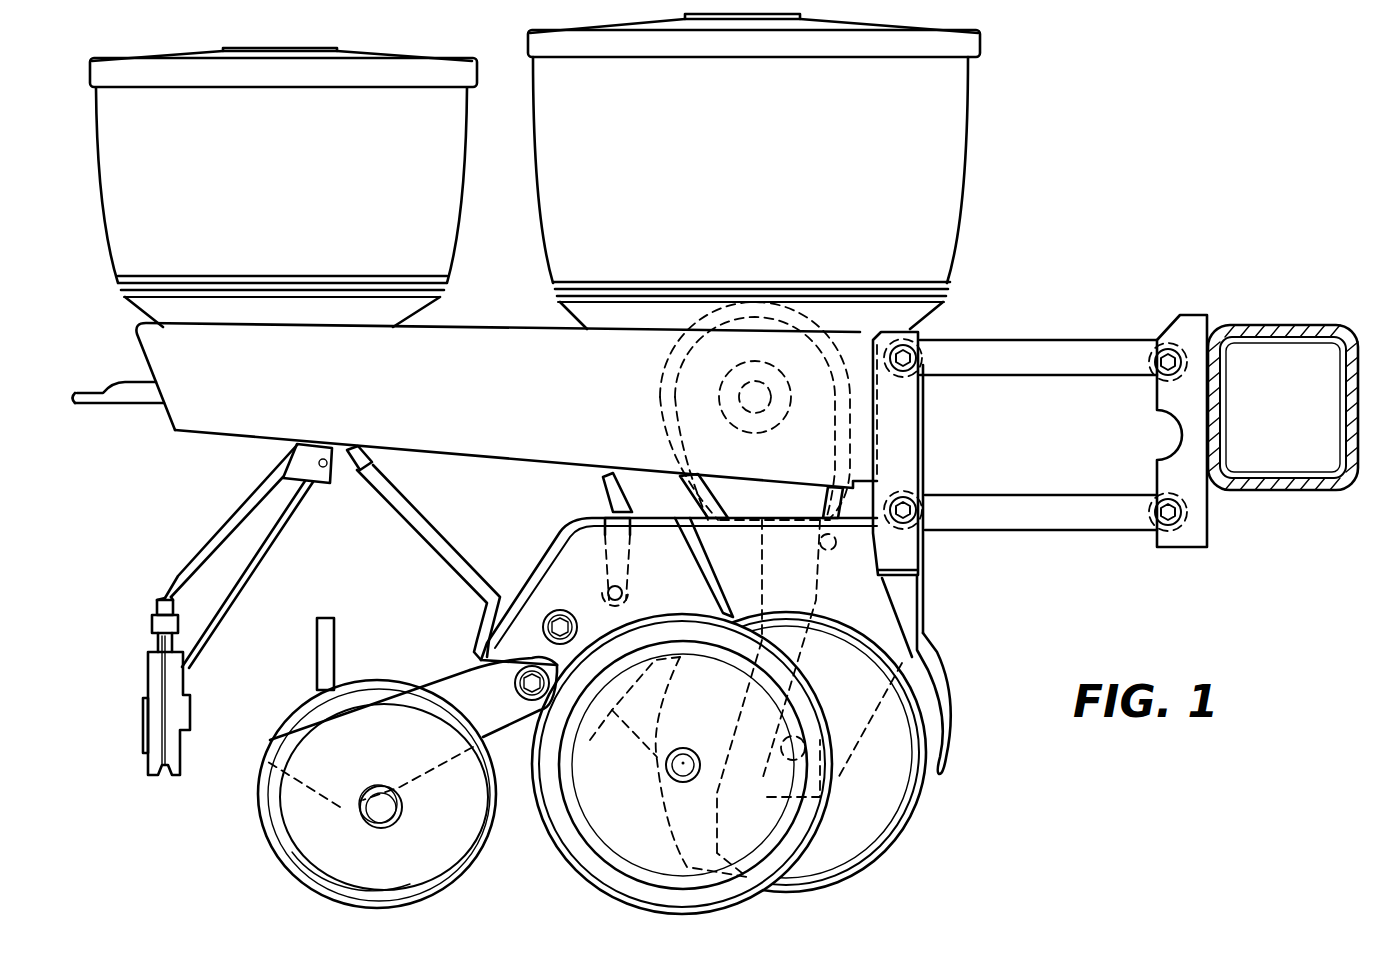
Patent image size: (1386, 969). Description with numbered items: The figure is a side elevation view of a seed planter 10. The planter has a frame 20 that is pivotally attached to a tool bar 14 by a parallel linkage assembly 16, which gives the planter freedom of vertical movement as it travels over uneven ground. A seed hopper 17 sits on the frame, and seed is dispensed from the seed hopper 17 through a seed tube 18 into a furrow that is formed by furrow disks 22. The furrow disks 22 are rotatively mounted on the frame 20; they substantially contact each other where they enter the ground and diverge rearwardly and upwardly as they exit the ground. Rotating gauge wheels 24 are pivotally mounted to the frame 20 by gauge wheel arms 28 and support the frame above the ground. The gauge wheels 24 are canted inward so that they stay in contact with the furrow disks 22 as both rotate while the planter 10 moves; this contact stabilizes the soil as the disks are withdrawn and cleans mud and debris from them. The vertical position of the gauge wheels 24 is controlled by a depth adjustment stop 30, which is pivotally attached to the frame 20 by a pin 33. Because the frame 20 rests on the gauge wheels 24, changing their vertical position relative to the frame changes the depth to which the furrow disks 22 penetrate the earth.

The planter 10 is at (1012, 285).
The tool bar 14 is at (1277, 470).
The parallel linkage assembly 16 is at (1047, 357).
The seed hopper 17 is at (742, 186).
The seed tube 18 is at (822, 572).
The frame 20 is at (173, 428).
The furrow disks 22 is at (903, 827).
The gauge wheels 24 is at (572, 853).
The gauge wheel arms 28 is at (741, 767).
The depth adjustment stop 30 is at (637, 615).
The pin 33 is at (607, 590).